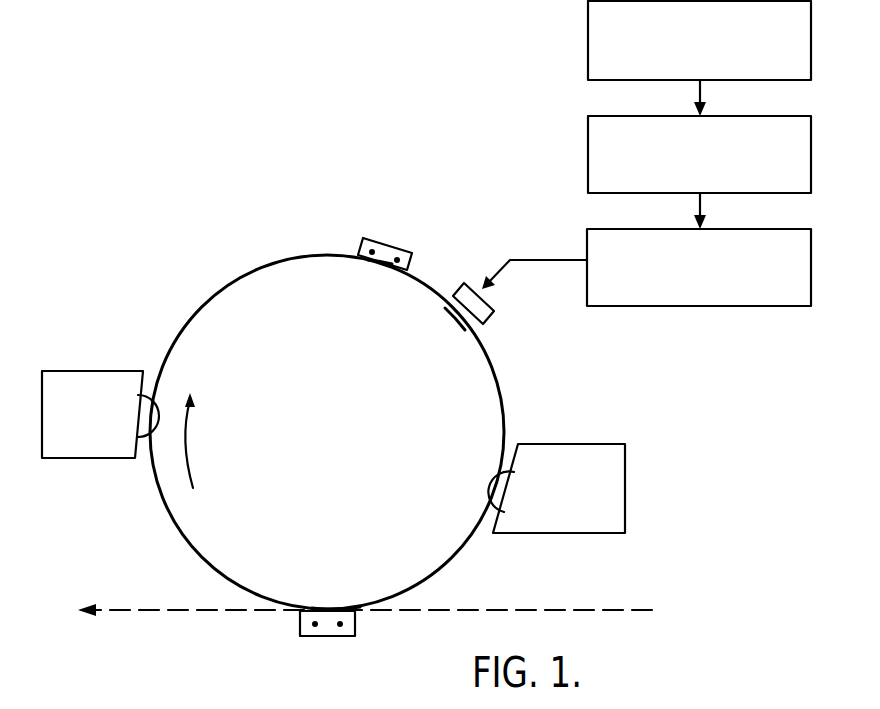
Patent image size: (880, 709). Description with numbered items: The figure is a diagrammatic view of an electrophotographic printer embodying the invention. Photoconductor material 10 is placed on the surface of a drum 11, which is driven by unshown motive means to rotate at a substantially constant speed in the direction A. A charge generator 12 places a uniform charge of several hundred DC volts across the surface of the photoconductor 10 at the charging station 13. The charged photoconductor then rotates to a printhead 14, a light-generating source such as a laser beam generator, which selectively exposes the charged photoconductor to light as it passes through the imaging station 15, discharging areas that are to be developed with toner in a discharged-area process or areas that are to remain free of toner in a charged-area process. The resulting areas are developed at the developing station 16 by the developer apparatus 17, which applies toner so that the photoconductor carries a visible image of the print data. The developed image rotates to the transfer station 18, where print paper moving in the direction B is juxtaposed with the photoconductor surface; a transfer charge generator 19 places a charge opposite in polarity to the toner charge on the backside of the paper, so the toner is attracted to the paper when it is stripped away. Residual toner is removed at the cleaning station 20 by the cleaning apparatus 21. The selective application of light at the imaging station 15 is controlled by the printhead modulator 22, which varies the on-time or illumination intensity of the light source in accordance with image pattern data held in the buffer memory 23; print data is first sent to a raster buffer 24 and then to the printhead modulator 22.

The photoconductor material 10 is at (250, 268).
The drum 11 is at (338, 477).
The charge generator 12 is at (393, 247).
The charging station 13 is at (380, 268).
The printhead 14 is at (490, 316).
The imaging station 15 is at (455, 318).
The developing station 16 is at (497, 484).
The developer apparatus 17 is at (563, 518).
The transfer station 18 is at (336, 609).
The transfer charge generator 19 is at (340, 636).
The cleaning station 20 is at (156, 412).
The cleaning apparatus 21 is at (95, 371).
The printhead modulator 22 is at (640, 306).
The buffer memory 23 is at (588, 50).
The raster buffer 24 is at (588, 145).
The direction of drum rotation A is at (198, 425).
The direction of paper movement B is at (365, 625).